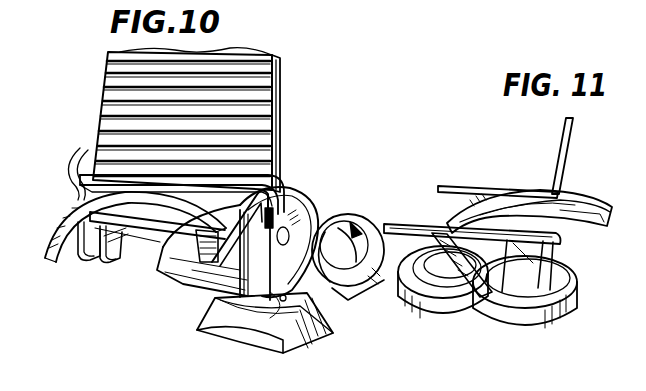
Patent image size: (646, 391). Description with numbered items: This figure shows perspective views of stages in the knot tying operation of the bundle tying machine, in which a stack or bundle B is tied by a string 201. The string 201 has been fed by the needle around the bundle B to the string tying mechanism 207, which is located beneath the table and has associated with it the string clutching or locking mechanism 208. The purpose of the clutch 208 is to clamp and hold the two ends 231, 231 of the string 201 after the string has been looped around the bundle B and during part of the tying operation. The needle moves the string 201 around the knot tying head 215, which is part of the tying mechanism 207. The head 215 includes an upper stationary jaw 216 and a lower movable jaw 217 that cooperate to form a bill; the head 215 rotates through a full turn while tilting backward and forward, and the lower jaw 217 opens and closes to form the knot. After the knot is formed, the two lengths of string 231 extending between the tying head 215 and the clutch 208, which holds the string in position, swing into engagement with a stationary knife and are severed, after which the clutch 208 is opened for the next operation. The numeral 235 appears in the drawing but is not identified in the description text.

In FIG. 10, the stack or bundle B is at (124, 78).
In FIG. 10, the string 201 is at (281, 72).
In FIG. 10, the string ends 231 is at (67, 166).
In FIG. 10, the string clutching or locking mechanism 208 is at (52, 262).
In FIG. 10, the upper stationary jaw 216 is at (212, 216).
In FIG. 11, the upper stationary jaw 216 is at (591, 198).
In FIG. 10, the string tying mechanism 207 is at (303, 165).
In FIG. 10, the cup ring 235 is at (366, 240).
In FIG. 11, the cup ring 235 is at (412, 302).
In FIG. 10, the knot tying head 215 is at (198, 304).
In FIG. 11, the lower movable jaw 217 is at (571, 238).